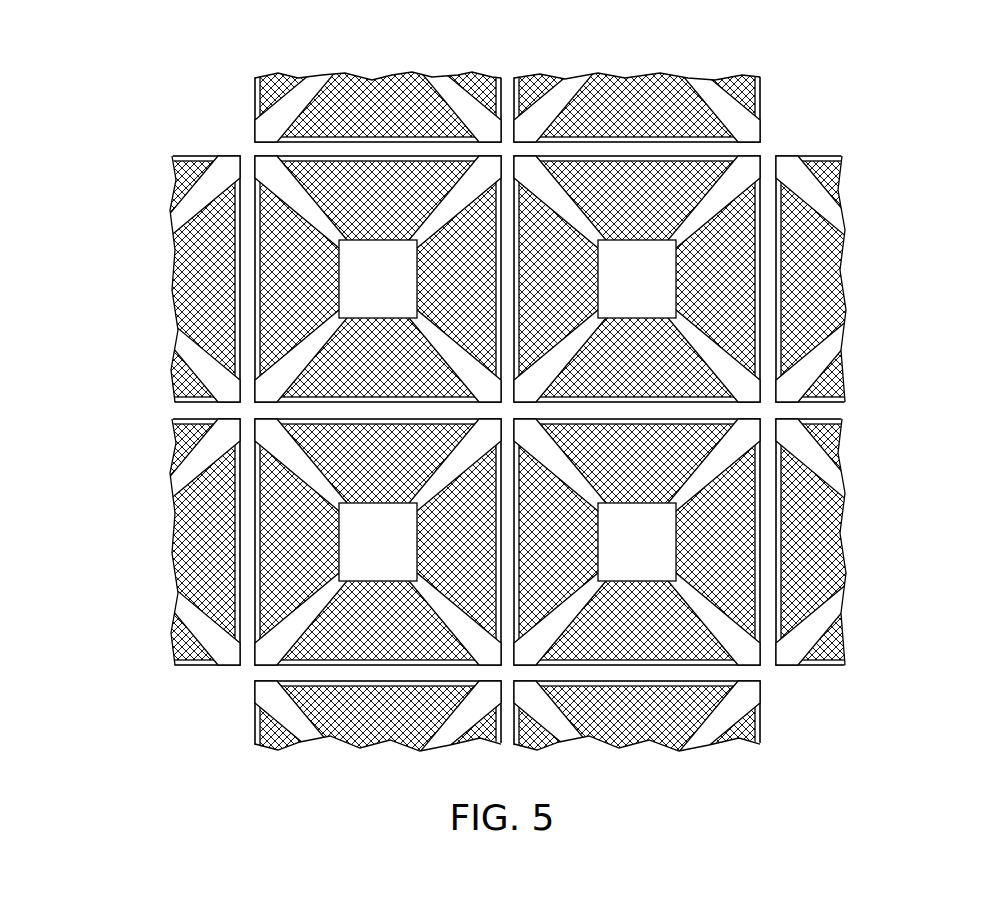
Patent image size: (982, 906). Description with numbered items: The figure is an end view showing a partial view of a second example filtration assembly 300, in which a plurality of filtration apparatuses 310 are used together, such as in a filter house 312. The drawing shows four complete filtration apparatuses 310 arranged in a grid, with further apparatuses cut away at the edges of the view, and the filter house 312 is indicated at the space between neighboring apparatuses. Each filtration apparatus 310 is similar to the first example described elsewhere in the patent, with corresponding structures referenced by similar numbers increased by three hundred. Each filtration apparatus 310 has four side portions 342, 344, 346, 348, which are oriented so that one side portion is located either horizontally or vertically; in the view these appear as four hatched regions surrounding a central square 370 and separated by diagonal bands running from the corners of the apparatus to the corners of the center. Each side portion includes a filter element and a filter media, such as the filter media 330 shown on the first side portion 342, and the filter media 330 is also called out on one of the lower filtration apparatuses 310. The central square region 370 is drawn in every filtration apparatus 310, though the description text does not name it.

The second example filtration assembly 300 is at (491, 453).
The filtration apparatus 310 is at (255, 156).
The filter house 312 is at (204, 598).
The filter media 330 is at (430, 348).
The first side portion 342 is at (558, 279).
The side portion 344 is at (637, 200).
The side portion 346 is at (715, 279).
The side portion 348 is at (637, 357).
The central platform 370 is at (355, 292).